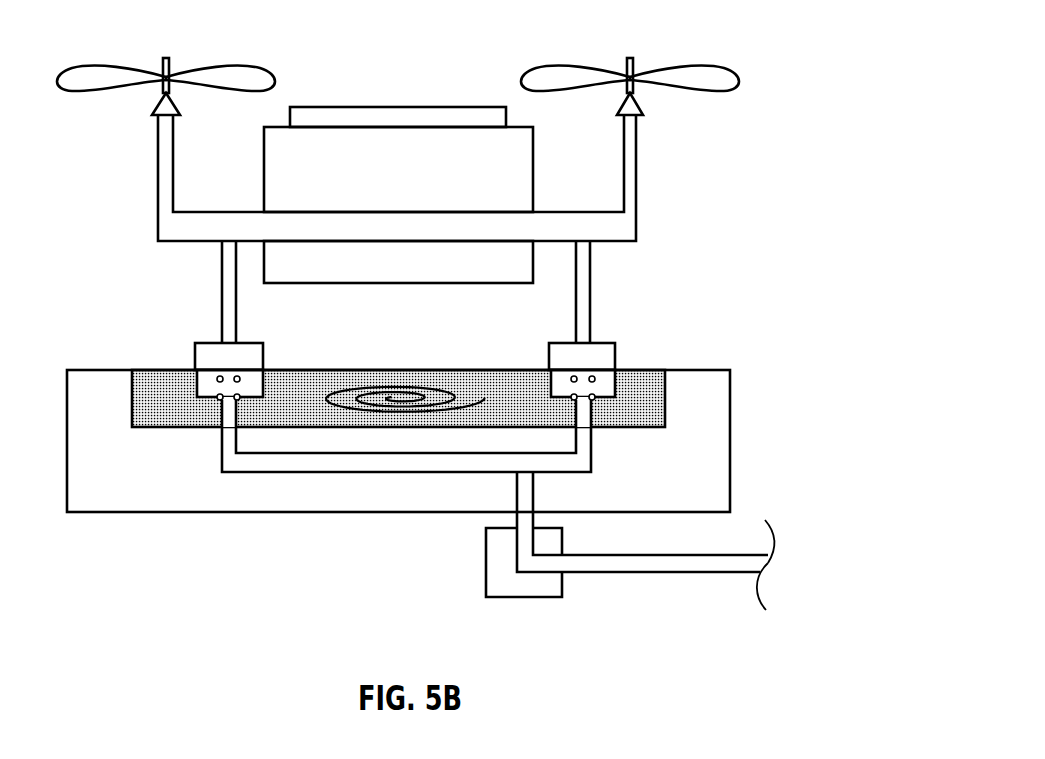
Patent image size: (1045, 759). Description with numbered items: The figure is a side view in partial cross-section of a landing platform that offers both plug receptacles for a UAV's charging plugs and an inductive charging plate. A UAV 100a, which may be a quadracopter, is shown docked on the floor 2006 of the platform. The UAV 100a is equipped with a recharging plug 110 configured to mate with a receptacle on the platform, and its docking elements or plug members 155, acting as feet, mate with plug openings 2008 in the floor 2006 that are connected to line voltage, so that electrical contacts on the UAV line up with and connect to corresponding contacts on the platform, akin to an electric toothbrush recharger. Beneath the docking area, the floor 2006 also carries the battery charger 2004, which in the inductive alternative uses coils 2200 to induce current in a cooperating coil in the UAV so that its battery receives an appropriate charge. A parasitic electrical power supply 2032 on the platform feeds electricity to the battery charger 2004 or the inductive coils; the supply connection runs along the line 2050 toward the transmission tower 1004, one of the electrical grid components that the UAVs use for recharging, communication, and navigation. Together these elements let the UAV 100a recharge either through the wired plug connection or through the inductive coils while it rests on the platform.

The UAV 100a is at (397, 107).
The docking elements 155 is at (199, 343).
The recharging plug 110 is at (250, 378).
The coils 2200 is at (373, 382).
The battery charger 2004 is at (655, 370).
The floor 2006 is at (720, 448).
The plug openings 2008 is at (217, 399).
The parasitic electrical power supply 2032 is at (497, 583).
The power line 2050 is at (705, 588).
The transmission tower 1004 is at (770, 563).